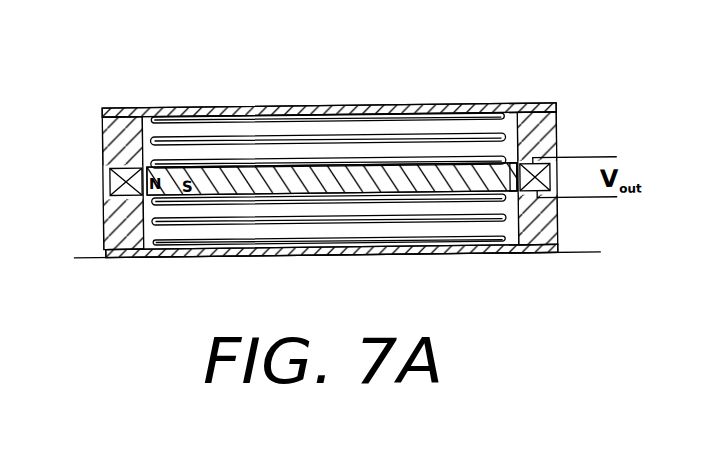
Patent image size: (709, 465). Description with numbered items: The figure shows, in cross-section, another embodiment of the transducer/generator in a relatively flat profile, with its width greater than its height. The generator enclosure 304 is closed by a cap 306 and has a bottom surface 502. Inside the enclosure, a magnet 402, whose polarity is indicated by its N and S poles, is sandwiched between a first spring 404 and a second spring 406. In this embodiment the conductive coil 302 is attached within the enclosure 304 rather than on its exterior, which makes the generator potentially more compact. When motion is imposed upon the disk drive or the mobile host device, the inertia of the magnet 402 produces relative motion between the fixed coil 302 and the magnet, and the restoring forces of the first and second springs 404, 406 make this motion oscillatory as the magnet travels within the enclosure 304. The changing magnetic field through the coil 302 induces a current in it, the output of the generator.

The conductive coil 302 is at (110, 181).
The generator enclosure 304 is at (106, 142).
The cap 306 is at (196, 107).
The magnet 402 is at (524, 166).
The first spring 404 is at (497, 103).
The second spring 406 is at (470, 254).
The bottom surface of the enclosure 502 is at (523, 255).